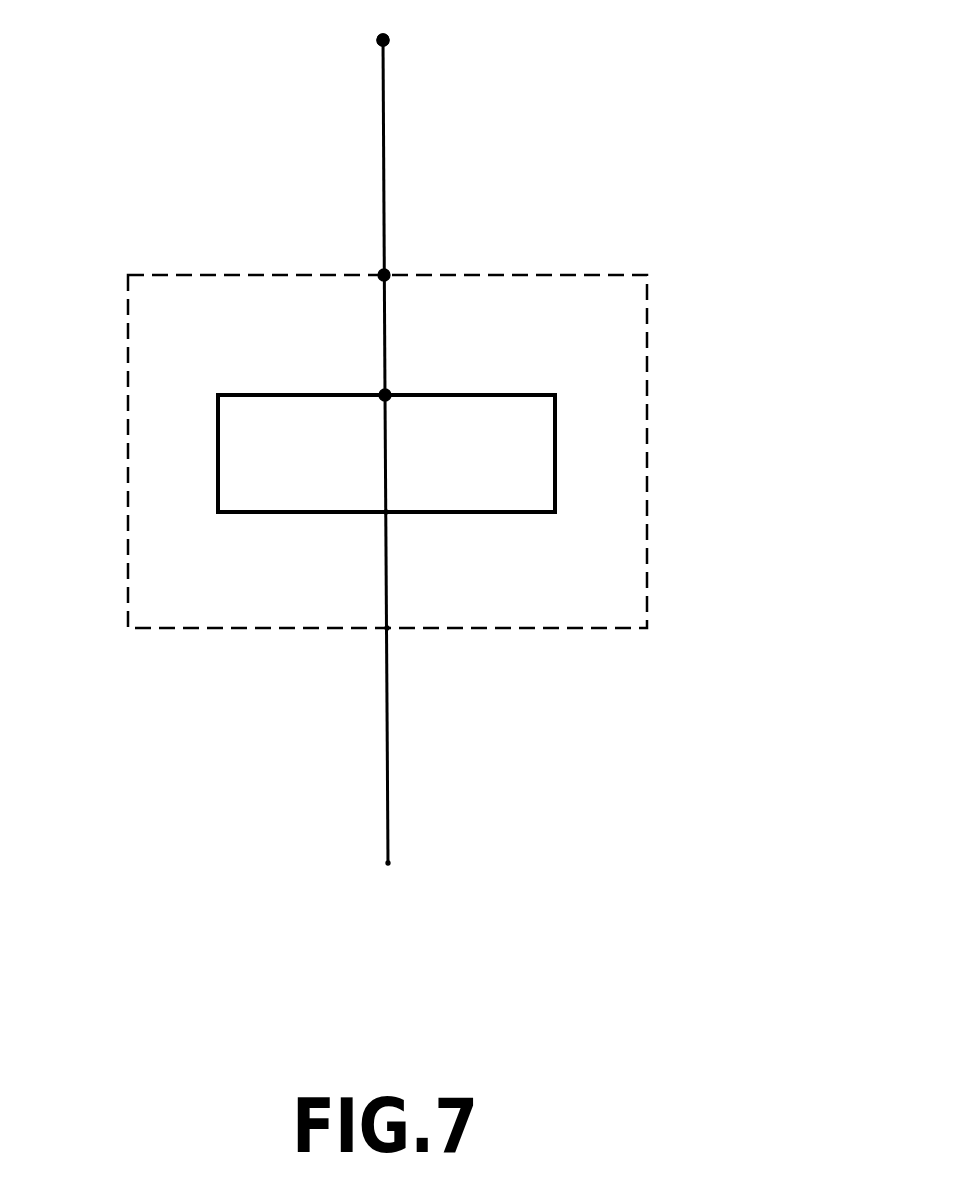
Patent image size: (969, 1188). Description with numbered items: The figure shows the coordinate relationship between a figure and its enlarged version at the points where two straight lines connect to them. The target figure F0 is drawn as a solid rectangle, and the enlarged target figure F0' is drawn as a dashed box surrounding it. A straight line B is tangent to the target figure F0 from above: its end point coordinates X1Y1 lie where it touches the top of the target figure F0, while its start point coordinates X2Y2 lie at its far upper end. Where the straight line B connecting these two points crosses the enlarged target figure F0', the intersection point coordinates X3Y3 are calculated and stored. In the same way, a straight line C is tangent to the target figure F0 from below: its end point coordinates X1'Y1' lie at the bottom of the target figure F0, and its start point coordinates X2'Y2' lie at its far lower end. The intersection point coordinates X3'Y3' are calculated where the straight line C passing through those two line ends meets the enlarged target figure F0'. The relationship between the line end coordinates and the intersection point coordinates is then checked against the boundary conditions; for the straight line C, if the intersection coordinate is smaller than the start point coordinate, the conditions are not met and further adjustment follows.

The straight line B is at (383, 150).
The straight line C is at (388, 757).
The target figure F0 is at (386, 500).
The enlarged target figure F0' is at (453, 535).
The start point coordinates (X2, Y2) X2Y2 is at (386, 42).
The intersection point coordinates (X3, Y3) X3Y3 is at (384, 273).
The end point coordinates (X1, Y1) X1Y1 is at (385, 393).
The end point coordinates (X1', Y1') X1'Y1' is at (280, 547).
The intersection point coordinates (X3', Y3') X3'Y3' is at (276, 658).
The start point coordinates (X2', Y2') X2'Y2' is at (502, 876).